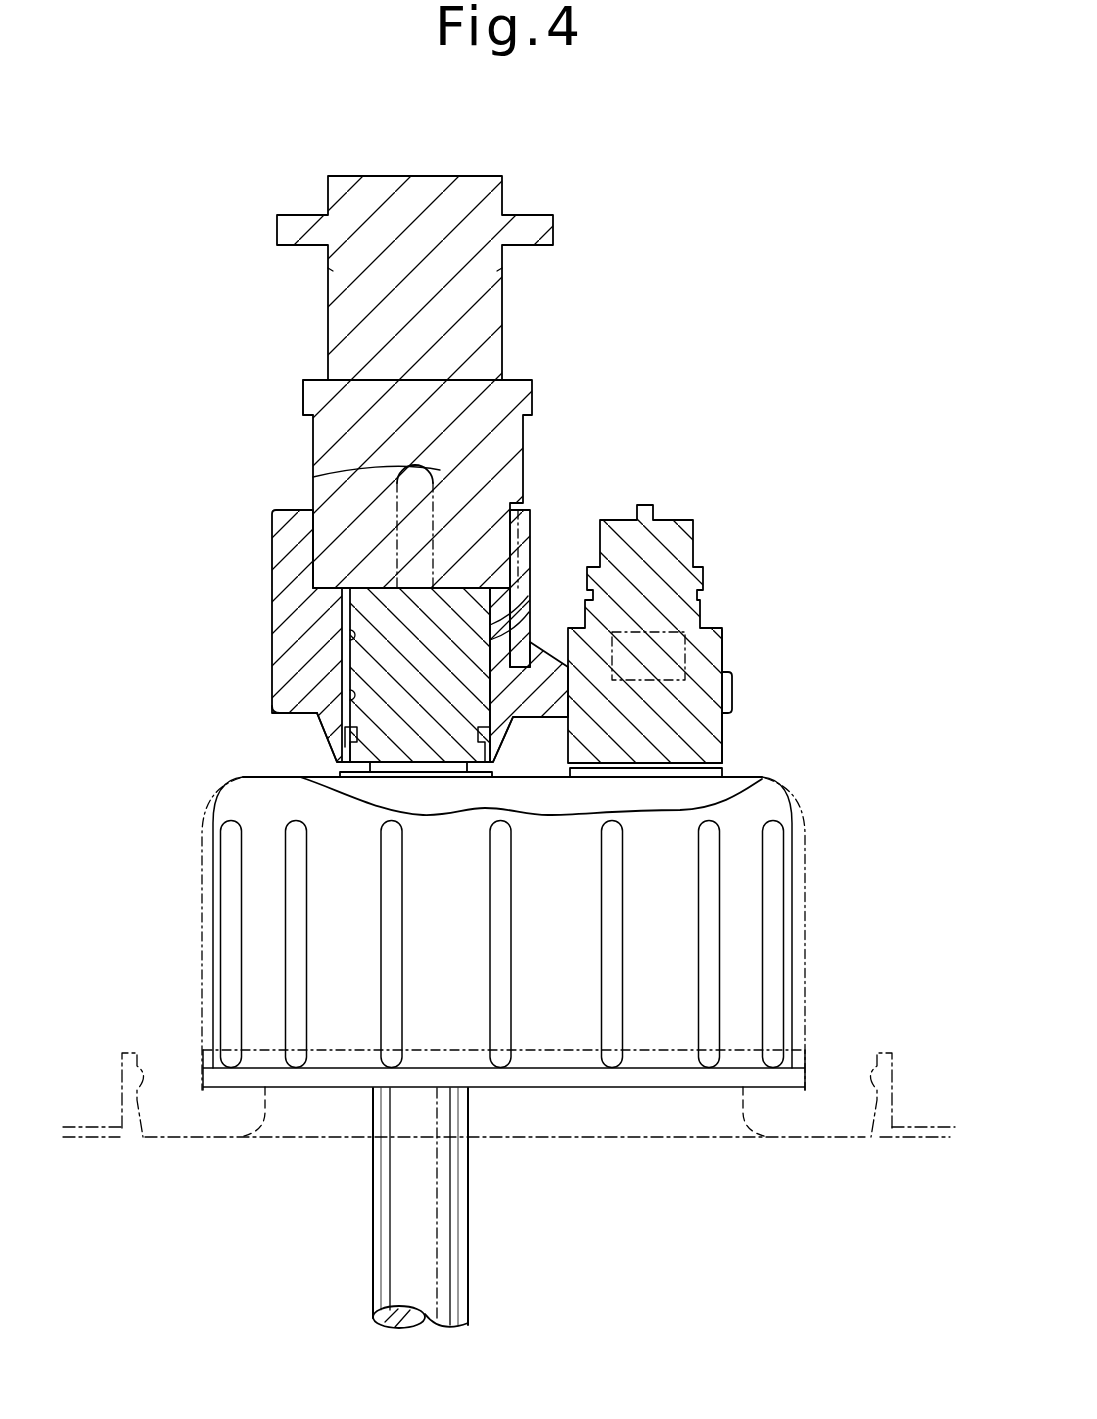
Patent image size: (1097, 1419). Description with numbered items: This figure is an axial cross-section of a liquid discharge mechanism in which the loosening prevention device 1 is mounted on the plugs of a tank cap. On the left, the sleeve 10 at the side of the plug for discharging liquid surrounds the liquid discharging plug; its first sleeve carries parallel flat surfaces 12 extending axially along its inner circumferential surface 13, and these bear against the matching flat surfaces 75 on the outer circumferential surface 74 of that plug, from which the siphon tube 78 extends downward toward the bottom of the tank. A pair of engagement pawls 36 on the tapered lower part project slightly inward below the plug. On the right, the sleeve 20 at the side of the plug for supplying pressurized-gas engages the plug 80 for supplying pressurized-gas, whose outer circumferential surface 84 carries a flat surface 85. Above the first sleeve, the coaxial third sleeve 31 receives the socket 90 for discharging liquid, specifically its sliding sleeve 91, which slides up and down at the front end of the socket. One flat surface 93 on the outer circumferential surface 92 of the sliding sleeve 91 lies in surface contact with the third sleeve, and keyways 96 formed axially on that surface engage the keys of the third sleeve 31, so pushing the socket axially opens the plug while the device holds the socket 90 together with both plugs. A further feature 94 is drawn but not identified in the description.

The loosening prevention device 1 is at (548, 540).
The sleeve at the side of the plug for discharging liquid 10 is at (255, 611).
The flat surfaces 12 is at (350, 652).
The inner circumferential surface 13 is at (300, 708).
The sleeve at the side of the plug for supplying pressurized-gas 20 is at (733, 690).
The third sleeve 31 is at (273, 517).
The engagement pawls 36 is at (337, 737).
The outer circumferential surface 74 is at (532, 643).
The flat surfaces 75 is at (536, 645).
The siphon tube 78 is at (448, 1265).
The plug for supplying pressurized-gas 80 is at (683, 617).
The outer circumferential surface 84 is at (724, 648).
The flat surface 85 is at (672, 655).
The socket for discharging liquid 90 is at (467, 192).
The sliding sleeve 91 is at (497, 440).
The outer circumferential surface 92 is at (313, 446).
The flat surface 93 is at (535, 590).
The sealing surface 94 is at (515, 498).
The keyways 96 is at (392, 542).